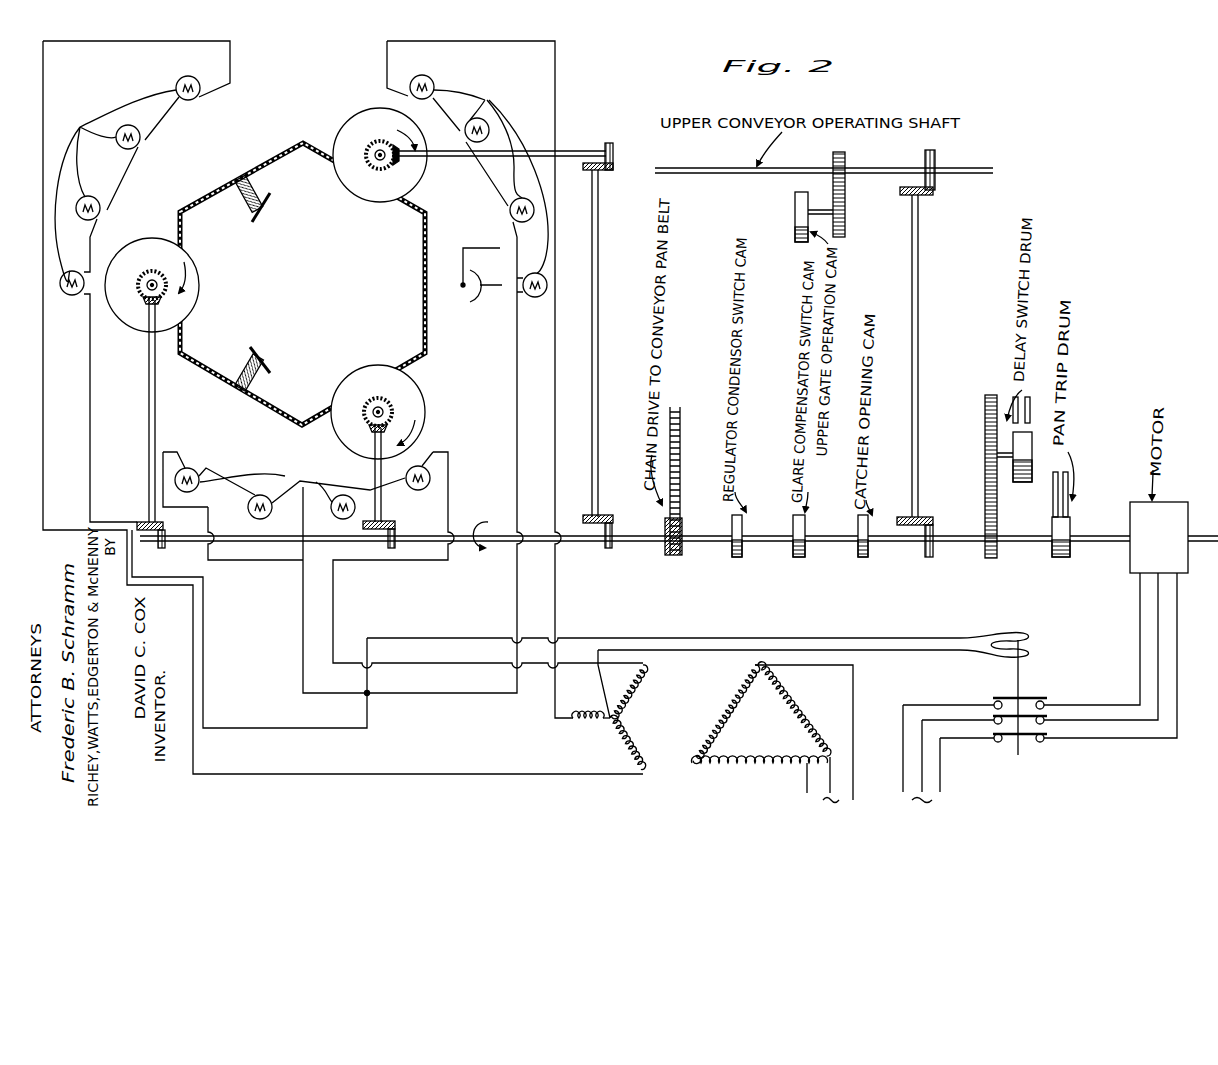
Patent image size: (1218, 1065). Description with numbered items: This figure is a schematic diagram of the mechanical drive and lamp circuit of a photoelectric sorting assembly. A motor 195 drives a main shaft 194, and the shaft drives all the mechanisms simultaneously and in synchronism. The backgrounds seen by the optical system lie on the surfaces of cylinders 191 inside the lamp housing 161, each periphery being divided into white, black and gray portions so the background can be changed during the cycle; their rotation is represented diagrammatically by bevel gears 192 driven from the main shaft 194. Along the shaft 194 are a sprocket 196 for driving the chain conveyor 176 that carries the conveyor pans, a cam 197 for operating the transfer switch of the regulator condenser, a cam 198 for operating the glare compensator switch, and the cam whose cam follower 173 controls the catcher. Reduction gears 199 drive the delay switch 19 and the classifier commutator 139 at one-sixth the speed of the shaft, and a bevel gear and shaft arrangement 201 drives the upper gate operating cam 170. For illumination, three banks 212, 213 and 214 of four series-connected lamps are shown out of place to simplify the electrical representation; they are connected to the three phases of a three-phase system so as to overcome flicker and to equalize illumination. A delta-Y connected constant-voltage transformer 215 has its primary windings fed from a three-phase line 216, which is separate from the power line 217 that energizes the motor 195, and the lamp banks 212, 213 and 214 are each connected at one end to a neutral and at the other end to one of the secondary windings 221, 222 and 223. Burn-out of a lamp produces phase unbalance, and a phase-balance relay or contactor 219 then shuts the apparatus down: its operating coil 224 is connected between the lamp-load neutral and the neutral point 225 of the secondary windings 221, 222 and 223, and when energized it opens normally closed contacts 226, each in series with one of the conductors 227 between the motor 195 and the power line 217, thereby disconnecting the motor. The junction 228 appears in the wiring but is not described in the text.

The delay switch 19 is at (1022, 484).
The classifier commutator 139 is at (1058, 558).
The lamp housing 161 is at (213, 228).
The upper gate operating cam 170 is at (795, 212).
The cam follower 173 is at (863, 557).
The chain conveyor 176 is at (678, 415).
The cylinders 191 is at (152, 238).
The bevel gears 192 is at (135, 300).
The main shaft 194 is at (572, 545).
The motor 195 is at (1175, 549).
The sprocket 196 is at (672, 558).
The cam 197 is at (737, 557).
The cam 198 is at (799, 557).
The reduction gears 199 is at (987, 500).
The bevel gear and shaft arrangement 201 is at (919, 372).
The lamp bank 212 is at (127, 185).
The lamp bank 213 is at (298, 485).
The lamp bank 214 is at (479, 186).
The constant-voltage transformer 215 is at (704, 734).
The three-phase line 216 is at (807, 783).
The power line 217 is at (903, 783).
The phase-balance relay or contactor 219 is at (1001, 704).
The transformer secondary winding 221 is at (752, 730).
The transformer secondary winding 222 is at (640, 674).
The transformer secondary winding 223 is at (588, 727).
The operating coil 224 is at (1028, 646).
The neutral point 225 is at (608, 727).
The normally closed contacts 226 is at (993, 736).
The conductors 227 is at (1155, 669).
The junction 228 is at (367, 694).